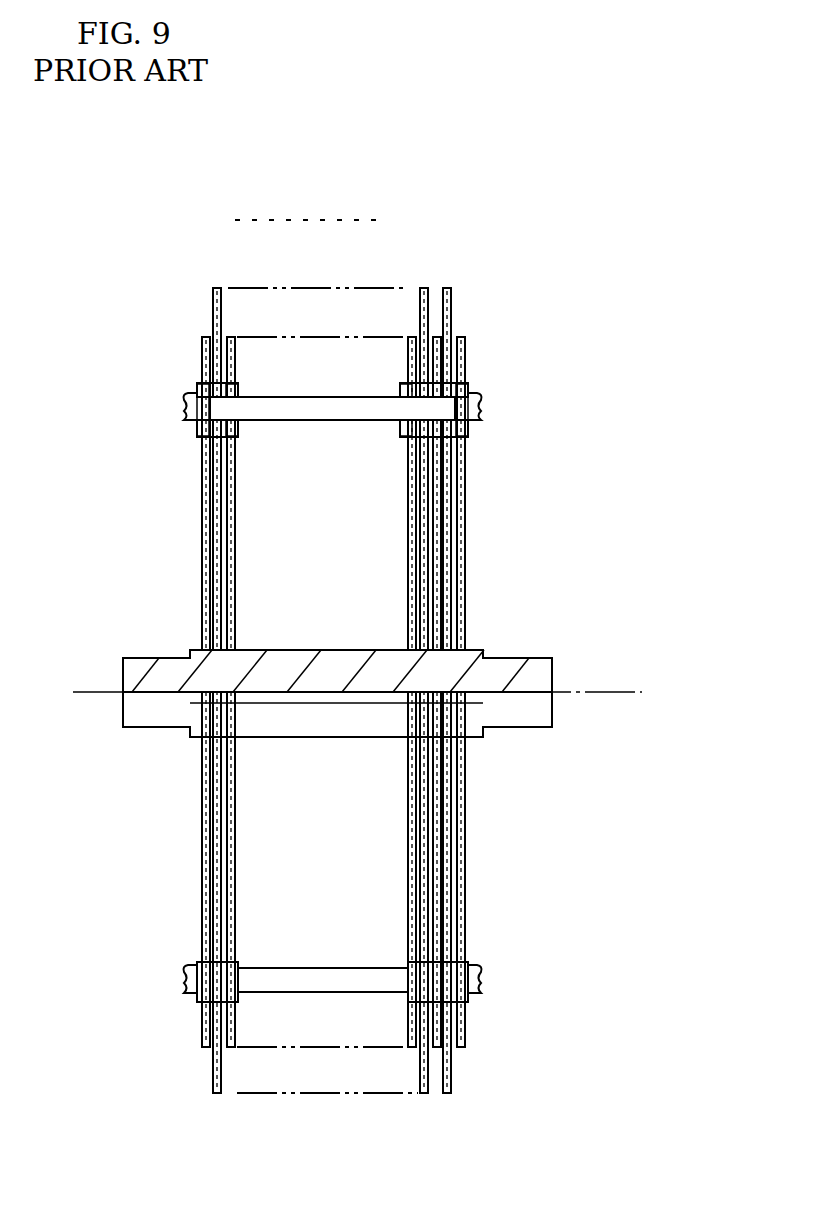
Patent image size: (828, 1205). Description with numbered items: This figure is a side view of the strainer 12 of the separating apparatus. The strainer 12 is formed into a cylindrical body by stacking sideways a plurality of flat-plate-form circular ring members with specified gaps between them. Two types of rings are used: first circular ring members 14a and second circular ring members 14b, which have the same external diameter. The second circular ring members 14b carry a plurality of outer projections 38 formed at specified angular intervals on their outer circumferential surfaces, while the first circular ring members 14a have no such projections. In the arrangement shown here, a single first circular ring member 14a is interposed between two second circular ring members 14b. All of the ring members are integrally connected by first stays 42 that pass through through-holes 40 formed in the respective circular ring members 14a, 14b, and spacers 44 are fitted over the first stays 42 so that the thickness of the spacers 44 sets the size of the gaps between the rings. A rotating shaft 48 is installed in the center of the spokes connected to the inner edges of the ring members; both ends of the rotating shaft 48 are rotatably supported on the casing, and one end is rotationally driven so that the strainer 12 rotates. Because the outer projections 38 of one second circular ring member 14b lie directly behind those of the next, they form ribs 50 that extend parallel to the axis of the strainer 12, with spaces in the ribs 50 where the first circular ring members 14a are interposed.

The strainer 12 is at (633, 322).
The first circular ring member 14a is at (465, 336).
The second circular ring member 14b is at (453, 298).
The outer projection 38 is at (427, 290).
The through-hole 40 is at (440, 432).
The first stay 42 is at (277, 410).
The spacer 44 is at (450, 377).
The rotating shaft 48 is at (142, 667).
The rib 50 is at (500, 197).